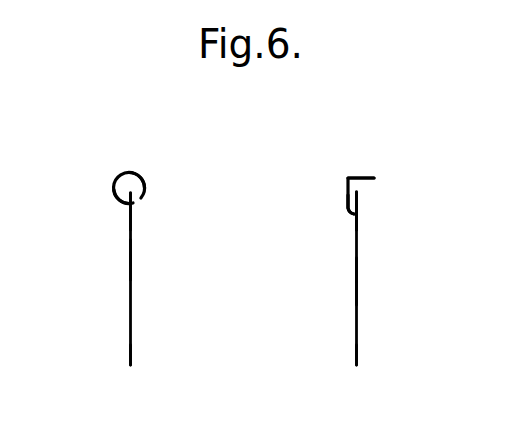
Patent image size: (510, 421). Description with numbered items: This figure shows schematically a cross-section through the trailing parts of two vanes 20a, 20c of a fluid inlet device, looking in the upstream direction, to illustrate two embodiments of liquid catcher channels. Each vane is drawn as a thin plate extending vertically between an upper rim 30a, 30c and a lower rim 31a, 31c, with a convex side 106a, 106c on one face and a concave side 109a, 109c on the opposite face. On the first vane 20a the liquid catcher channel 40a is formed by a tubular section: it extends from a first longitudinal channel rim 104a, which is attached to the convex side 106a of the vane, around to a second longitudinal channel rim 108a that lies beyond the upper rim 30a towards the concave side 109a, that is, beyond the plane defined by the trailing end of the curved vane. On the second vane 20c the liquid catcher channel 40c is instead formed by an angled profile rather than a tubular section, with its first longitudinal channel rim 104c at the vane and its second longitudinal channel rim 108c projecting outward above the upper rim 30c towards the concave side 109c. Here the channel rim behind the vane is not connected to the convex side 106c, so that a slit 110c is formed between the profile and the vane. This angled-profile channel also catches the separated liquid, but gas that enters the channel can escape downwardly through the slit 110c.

The vane 20a is at (130, 337).
The upper rim 30a is at (131, 194).
The lower rim 31a is at (130, 364).
The liquid catcher channel 40a is at (131, 173).
The first longitudinal channel rim 104a is at (126, 204).
The convex side 106a is at (130, 253).
The second longitudinal channel rim 108a is at (148, 187).
The concave side 109a is at (130, 266).
The vane 20c is at (357, 333).
The upper rim 30c is at (357, 194).
The lower rim 31c is at (357, 364).
The liquid catcher channel 40c is at (351, 174).
The first longitudinal channel rim 104c is at (348, 208).
The convex side 106c is at (357, 293).
The second longitudinal channel rim 108c is at (376, 177).
The concave side 109c is at (357, 270).
The slit 110c is at (352, 213).